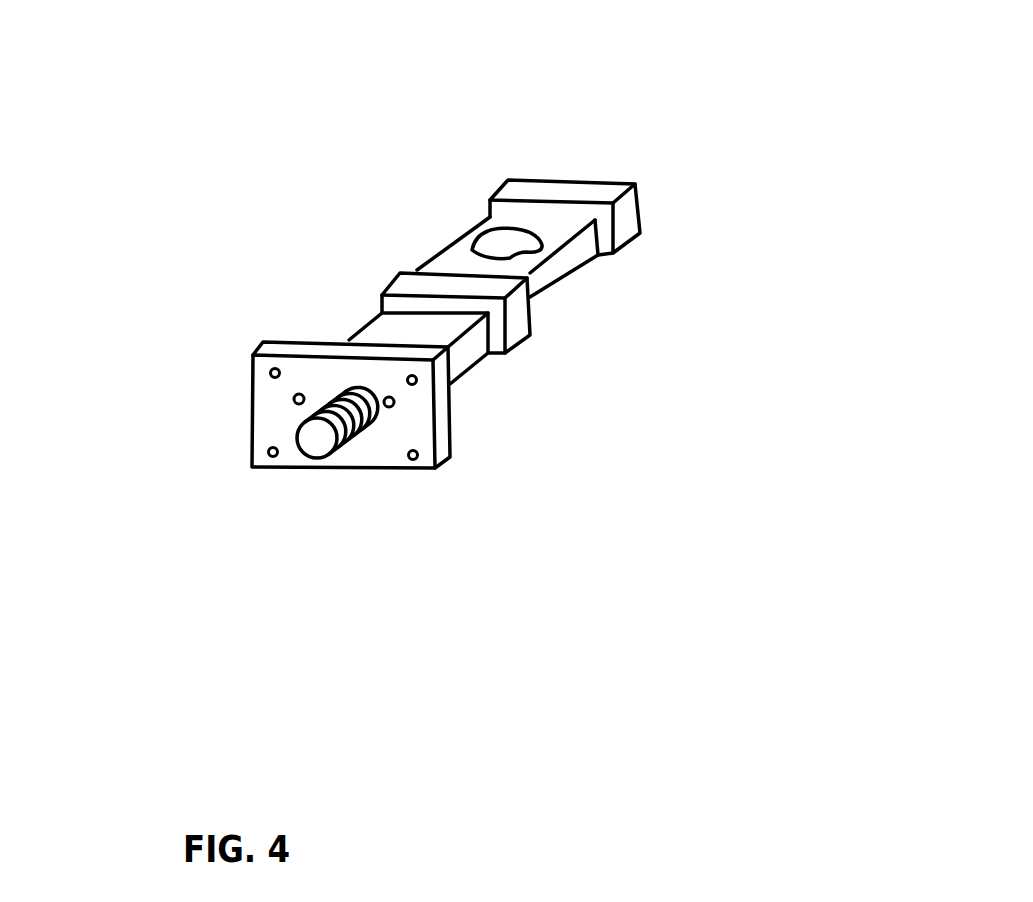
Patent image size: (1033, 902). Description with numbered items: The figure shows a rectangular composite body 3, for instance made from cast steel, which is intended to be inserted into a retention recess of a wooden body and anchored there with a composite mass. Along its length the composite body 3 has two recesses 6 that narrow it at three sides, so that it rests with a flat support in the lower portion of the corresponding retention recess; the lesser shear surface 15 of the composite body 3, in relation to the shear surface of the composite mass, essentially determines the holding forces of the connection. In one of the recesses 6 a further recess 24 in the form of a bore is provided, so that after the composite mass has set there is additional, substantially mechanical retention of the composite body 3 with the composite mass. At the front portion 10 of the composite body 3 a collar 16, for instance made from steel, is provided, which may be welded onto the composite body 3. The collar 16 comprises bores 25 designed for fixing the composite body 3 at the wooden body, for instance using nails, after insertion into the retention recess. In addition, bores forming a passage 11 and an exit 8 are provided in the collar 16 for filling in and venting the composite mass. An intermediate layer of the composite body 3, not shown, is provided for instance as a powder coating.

The composite body 3 is at (728, 127).
The recesses 6 is at (377, 296).
The exit 8 is at (390, 407).
The front portion 10 is at (232, 400).
The passage 11 is at (298, 404).
The shear surface 15 is at (575, 293).
The collar 16 is at (258, 437).
The further recess 24 is at (513, 238).
The bores 25 is at (438, 468).